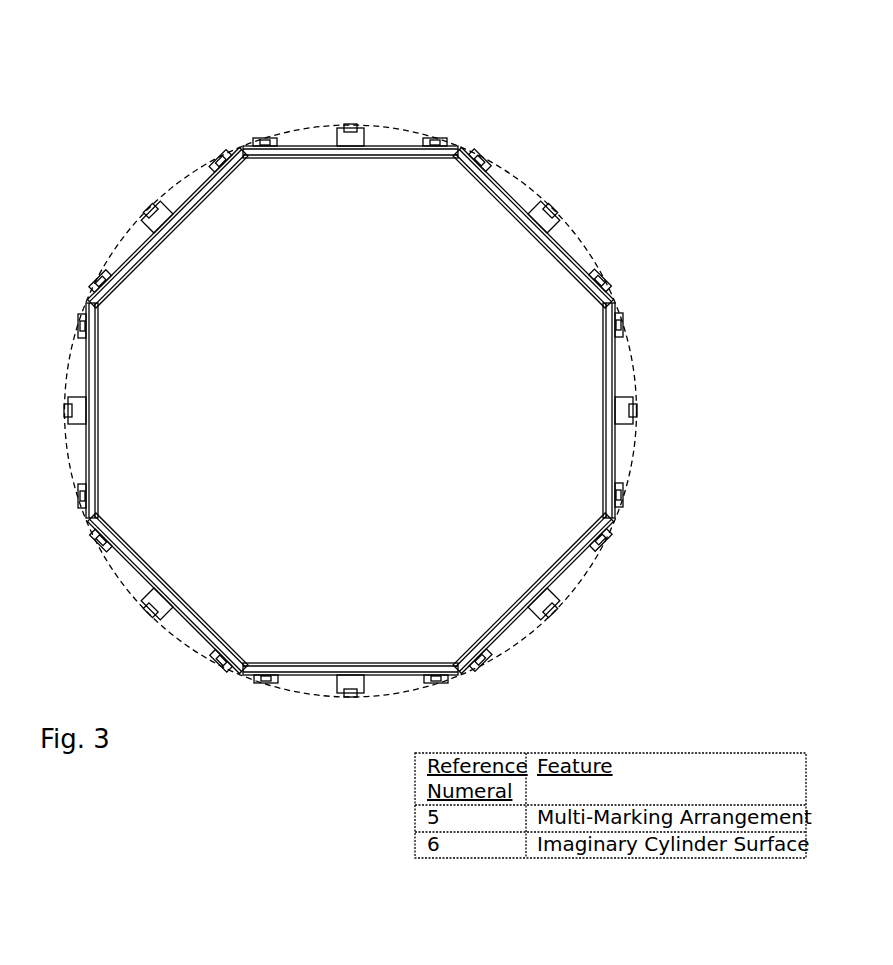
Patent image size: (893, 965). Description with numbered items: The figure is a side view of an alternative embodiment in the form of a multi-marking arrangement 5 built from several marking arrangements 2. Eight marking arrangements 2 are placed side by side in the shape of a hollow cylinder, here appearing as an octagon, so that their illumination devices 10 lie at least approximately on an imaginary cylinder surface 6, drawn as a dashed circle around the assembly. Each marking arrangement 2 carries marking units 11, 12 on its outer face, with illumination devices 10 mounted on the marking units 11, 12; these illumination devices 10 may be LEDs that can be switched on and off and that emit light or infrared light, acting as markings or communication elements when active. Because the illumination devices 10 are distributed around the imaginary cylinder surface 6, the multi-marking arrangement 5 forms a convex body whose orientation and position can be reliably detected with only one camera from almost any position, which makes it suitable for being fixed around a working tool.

The marking arrangement 2 is at (325, 153).
The multi-marking arrangement 5 is at (562, 666).
The imaginary cylinder surface 6 is at (583, 578).
The illumination device 10 is at (266, 137).
The marking unit 11 is at (258, 137).
The marking unit 12 is at (337, 128).